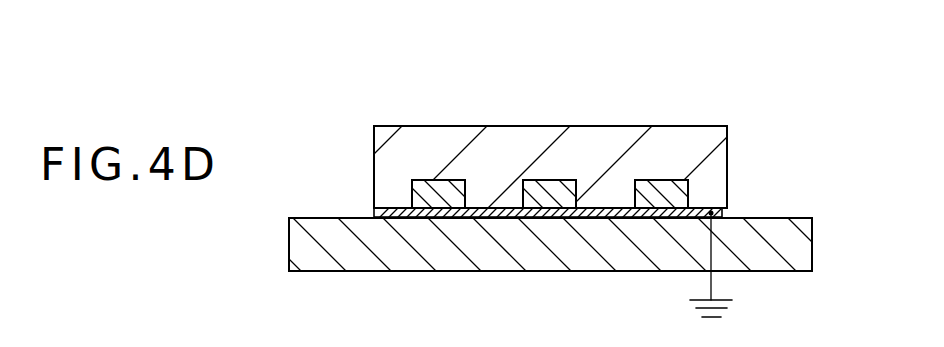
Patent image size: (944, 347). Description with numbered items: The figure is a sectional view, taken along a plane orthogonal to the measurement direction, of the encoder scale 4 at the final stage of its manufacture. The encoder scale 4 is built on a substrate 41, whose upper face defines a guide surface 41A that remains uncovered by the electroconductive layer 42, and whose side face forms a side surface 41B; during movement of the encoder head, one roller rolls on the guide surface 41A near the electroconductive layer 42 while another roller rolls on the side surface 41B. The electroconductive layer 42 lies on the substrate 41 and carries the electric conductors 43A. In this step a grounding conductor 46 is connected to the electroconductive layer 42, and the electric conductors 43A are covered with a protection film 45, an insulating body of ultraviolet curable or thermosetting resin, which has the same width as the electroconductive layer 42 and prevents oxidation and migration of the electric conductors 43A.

The encoder scale 4 is at (618, 81).
The substrate 41 is at (304, 246).
The guide surface 41A is at (307, 217).
The side surface 41B is at (812, 254).
The electroconductive layer 42 is at (727, 210).
The electric conductor 43A is at (425, 180).
The protection film 45 is at (711, 126).
The grounding conductor 46 is at (712, 287).